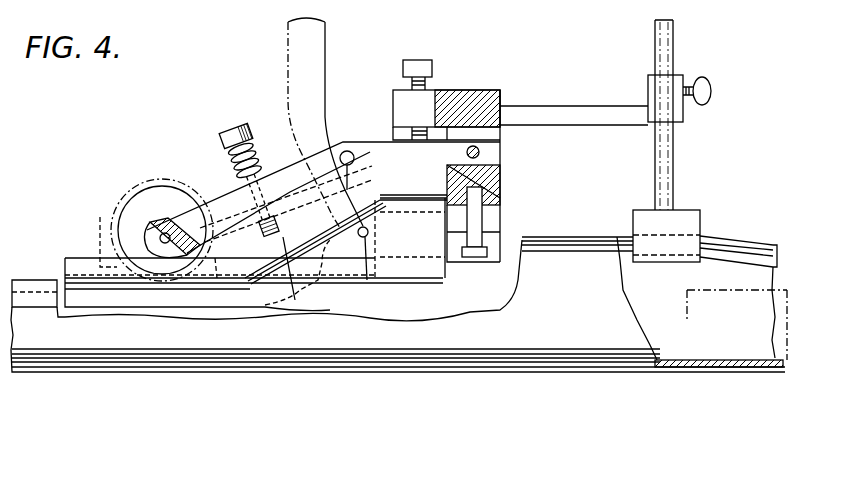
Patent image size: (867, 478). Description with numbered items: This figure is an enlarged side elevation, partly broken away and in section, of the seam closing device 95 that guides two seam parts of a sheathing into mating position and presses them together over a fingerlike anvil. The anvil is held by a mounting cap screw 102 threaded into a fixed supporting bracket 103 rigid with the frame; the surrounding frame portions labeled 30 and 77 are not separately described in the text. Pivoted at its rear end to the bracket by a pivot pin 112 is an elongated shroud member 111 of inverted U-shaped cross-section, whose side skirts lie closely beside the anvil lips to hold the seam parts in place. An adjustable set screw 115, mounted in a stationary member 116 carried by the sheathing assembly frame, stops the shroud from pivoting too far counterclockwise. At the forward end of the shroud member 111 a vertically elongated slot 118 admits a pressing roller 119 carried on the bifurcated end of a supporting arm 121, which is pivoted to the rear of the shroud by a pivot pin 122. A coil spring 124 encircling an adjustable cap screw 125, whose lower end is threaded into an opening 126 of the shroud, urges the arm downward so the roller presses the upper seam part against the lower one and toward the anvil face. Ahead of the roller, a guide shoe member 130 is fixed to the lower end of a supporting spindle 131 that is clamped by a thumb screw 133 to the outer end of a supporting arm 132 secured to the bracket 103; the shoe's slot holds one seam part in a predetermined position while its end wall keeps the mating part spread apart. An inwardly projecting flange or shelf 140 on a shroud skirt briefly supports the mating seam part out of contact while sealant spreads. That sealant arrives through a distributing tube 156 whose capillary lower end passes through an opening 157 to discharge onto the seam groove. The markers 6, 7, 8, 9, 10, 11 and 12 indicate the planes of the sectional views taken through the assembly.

The section line 6- 6 is at (707, 193).
The section line 7- 7 is at (512, 87).
The section line 8- 8 is at (417, 5).
The section line 9- 9 is at (347, 97).
The section line 10- 10 is at (300, 72).
The section line 11- 11 is at (250, 88).
The section line 12- 12 is at (200, 145).
The frame end 30 is at (783, 360).
The base rail 77 is at (605, 366).
The seam closing device 95 is at (136, 218).
The mounting cap screw 102 is at (483, 217).
The fixed supporting bracket 103 is at (483, 173).
The shroud member 111 is at (75, 258).
The pivot pin 112 is at (480, 152).
The adjustable set screw 115 is at (432, 62).
The stationary member 116 is at (443, 90).
The slot 118 is at (103, 233).
The pressing roller 119 is at (147, 190).
The supporting arm 121 is at (217, 203).
The pivot pin 122 is at (357, 161).
The coil spring 124 is at (262, 140).
The adjustable cap screw 125 is at (227, 123).
The opening 126 is at (277, 232).
The guide shoe member 130 is at (693, 218).
The supporting spindle 131 is at (657, 147).
The supporting arm 132 is at (588, 105).
The thumb screw 133 is at (711, 84).
The flange or shelf 140 is at (328, 208).
The distributing tube 156 is at (320, 22).
The opening 157 is at (372, 280).